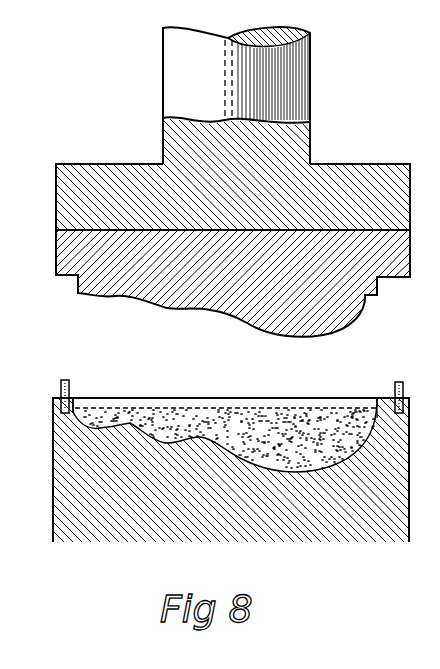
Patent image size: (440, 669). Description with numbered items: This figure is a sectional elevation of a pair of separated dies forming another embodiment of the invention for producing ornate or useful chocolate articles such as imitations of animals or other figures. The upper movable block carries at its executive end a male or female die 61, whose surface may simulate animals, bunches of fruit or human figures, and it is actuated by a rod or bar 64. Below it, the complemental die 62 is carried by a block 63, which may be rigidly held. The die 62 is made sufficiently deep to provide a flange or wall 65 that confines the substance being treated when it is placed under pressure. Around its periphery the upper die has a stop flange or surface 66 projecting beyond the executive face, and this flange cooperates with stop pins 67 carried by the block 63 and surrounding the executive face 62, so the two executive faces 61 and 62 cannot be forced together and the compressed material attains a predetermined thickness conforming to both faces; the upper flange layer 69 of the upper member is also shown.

The die 61 is at (245, 223).
The complemental die 62 is at (178, 440).
The block 63 is at (246, 470).
The rod or bar 64 is at (272, 92).
The flange or wall 65 is at (77, 407).
The stop flange 66 is at (70, 278).
The stop pins 67 is at (61, 382).
The upper flange layer 69 is at (400, 165).